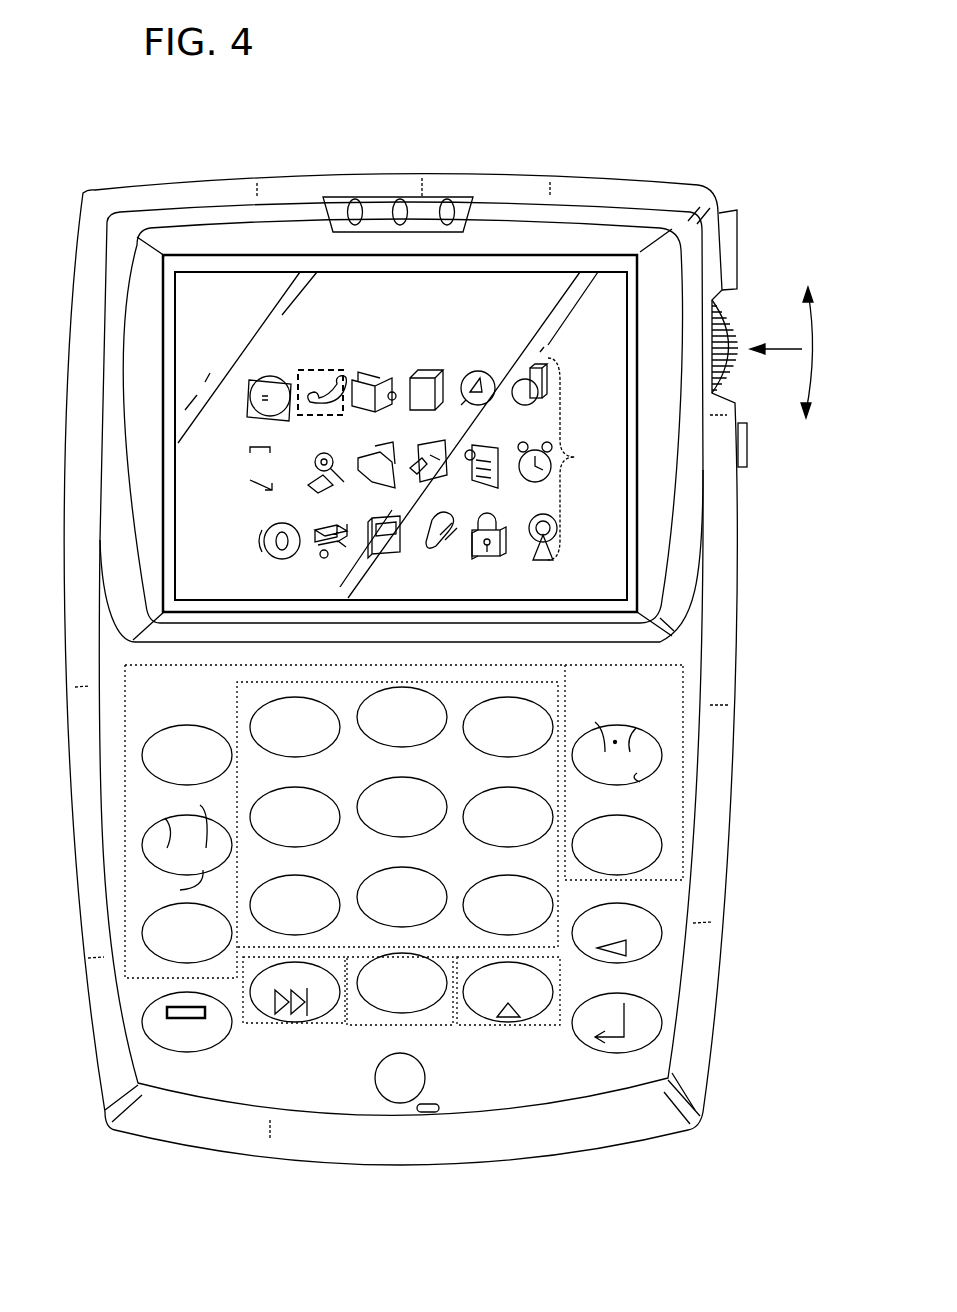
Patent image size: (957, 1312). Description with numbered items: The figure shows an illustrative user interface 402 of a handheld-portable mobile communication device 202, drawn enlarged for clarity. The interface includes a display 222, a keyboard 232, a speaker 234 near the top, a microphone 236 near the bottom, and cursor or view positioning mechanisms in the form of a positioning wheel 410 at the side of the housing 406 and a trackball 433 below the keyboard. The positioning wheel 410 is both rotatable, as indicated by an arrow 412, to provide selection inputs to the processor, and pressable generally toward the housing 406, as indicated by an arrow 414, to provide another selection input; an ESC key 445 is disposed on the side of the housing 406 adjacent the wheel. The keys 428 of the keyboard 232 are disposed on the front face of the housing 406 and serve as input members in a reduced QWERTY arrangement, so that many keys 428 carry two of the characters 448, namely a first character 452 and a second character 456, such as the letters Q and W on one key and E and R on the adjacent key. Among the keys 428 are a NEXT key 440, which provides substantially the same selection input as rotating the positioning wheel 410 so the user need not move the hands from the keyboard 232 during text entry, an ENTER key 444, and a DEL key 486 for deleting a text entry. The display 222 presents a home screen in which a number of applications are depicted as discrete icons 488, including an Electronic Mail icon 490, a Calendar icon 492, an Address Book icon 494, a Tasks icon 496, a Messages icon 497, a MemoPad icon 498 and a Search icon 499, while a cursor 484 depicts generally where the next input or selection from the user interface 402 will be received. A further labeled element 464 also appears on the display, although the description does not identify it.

The mobile communication device 202 is at (228, 155).
The speaker 234 is at (380, 200).
The housing 406 is at (580, 180).
The display 222 is at (608, 300).
The arrow 412 is at (808, 290).
The arrow 414 is at (780, 348).
The positioning wheel 410 is at (736, 357).
The ESC key 445 is at (747, 445).
The cursor 464 is at (465, 366).
The Electronic Mail icon 490 is at (266, 376).
The cursor 484 is at (306, 366).
The Address Book icon 494 is at (374, 368).
The Calendar icon 492 is at (426, 372).
The Messages icon 497 is at (271, 458).
The Search icon 499 is at (328, 456).
The Tasks icon 496 is at (423, 450).
The MemoPad icon 498 is at (482, 448).
The icons 488 is at (578, 457).
The user interface 402 is at (758, 675).
The keys 428 is at (158, 732).
The first character 452 is at (165, 818).
The second character 456 is at (200, 805).
The characters 448 is at (170, 858).
The keyboard 232 is at (672, 822).
The NEXT key 440 is at (298, 1020).
The trackball 433 is at (420, 1058).
The DEL key 486 is at (663, 940).
The ENTER key 444 is at (657, 998).
The microphone 236 is at (430, 1115).